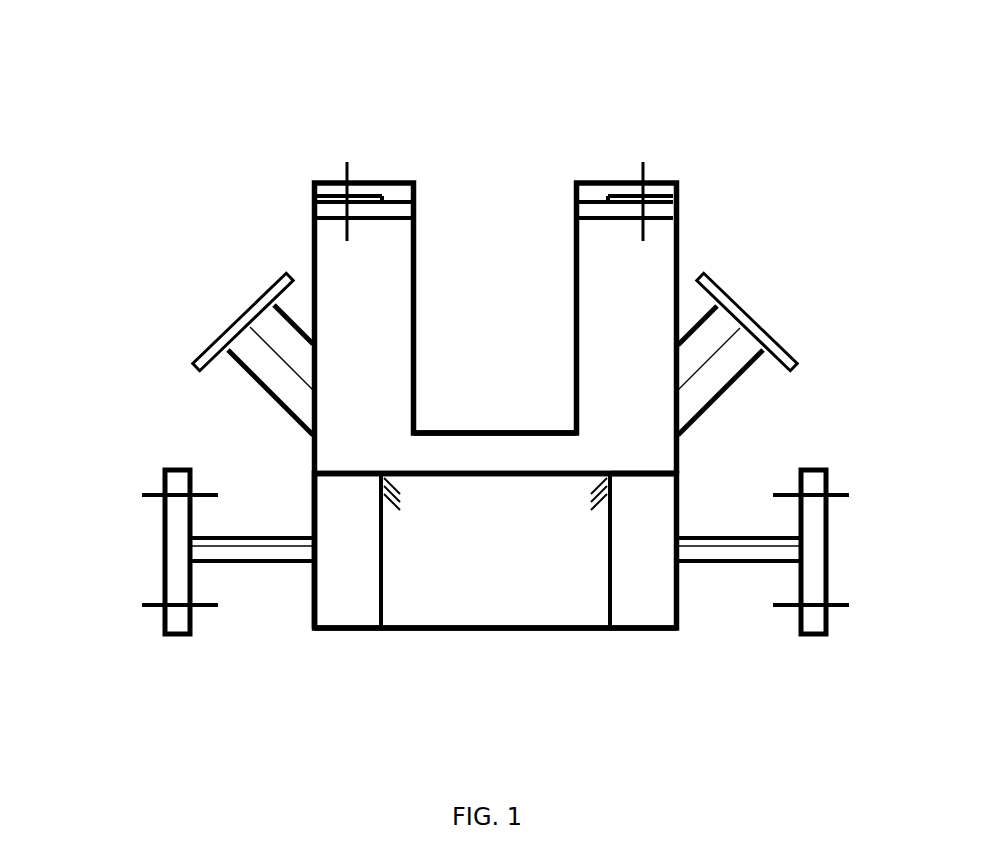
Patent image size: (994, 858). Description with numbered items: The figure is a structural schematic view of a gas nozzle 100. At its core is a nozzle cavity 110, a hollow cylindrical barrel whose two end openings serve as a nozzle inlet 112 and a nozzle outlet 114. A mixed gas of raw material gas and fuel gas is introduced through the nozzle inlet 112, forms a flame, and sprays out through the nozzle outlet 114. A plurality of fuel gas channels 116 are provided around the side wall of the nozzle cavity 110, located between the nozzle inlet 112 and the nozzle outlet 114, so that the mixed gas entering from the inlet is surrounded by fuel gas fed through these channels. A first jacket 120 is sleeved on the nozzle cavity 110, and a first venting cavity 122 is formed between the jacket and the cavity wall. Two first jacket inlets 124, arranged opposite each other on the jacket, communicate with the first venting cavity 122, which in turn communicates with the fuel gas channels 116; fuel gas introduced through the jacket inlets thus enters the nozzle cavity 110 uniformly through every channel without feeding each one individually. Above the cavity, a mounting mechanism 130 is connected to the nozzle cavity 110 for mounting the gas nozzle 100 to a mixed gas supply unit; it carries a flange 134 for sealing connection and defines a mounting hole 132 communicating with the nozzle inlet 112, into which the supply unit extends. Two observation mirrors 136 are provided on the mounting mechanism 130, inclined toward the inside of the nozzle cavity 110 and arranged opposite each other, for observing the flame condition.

The gas nozzle 100 is at (300, 42).
The nozzle cavity 110 is at (500, 580).
The nozzle inlet 112 is at (513, 493).
The nozzle outlet 114 is at (430, 641).
The fuel gas channels 116 is at (640, 472).
The first jacket 120 is at (308, 593).
The first venting cavity 122 is at (344, 591).
The first jacket inlet 124 is at (188, 552).
The mounting mechanism 130 is at (350, 288).
The mounting hole 132 is at (500, 234).
The flange 134 is at (343, 179).
The observation mirror 136 is at (240, 318).